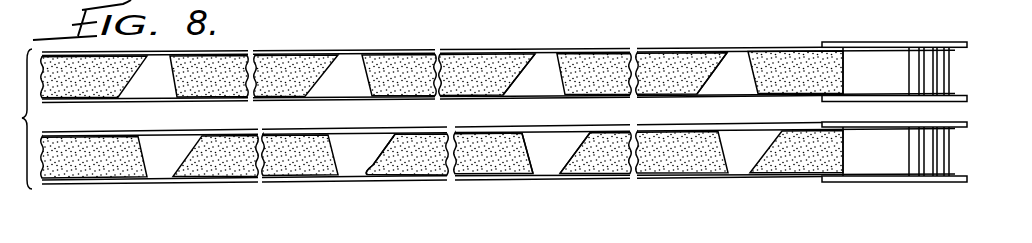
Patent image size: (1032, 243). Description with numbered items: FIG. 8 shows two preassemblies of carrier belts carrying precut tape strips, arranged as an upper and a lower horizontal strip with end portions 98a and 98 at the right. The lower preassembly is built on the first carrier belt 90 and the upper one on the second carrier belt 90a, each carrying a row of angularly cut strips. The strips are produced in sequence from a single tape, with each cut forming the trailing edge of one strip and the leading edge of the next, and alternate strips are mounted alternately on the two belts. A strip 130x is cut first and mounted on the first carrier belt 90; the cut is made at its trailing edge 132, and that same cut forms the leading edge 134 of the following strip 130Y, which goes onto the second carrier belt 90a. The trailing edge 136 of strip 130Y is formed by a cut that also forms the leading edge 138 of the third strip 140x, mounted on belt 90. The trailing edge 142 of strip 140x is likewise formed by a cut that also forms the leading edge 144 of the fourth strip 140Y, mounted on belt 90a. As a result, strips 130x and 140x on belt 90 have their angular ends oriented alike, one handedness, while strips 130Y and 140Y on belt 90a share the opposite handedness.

The first carrier belt 90 is at (738, 170).
The second carrier belt 90a is at (737, 50).
The lower end plate 98 is at (898, 183).
The upper end plate 98a is at (881, 42).
The first strip 130x is at (652, 173).
The second strip 130Y is at (627, 25).
The trailing edge 132 is at (560, 172).
The leading edge 134 is at (697, 92).
The trailing edge 136 is at (557, 62).
The leading edge 138 is at (533, 171).
The third strip 140x is at (450, 175).
The fourth strip 140Y is at (414, 57).
The trailing edge 142 is at (366, 172).
The leading edge 144 is at (503, 92).